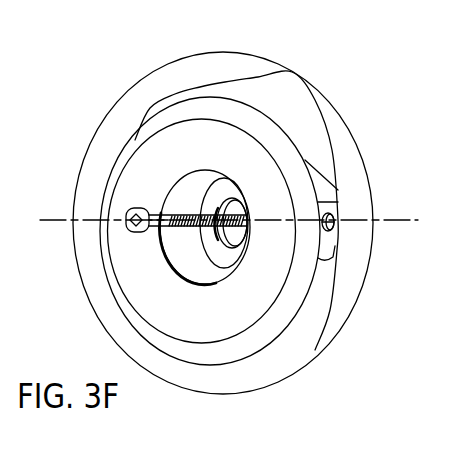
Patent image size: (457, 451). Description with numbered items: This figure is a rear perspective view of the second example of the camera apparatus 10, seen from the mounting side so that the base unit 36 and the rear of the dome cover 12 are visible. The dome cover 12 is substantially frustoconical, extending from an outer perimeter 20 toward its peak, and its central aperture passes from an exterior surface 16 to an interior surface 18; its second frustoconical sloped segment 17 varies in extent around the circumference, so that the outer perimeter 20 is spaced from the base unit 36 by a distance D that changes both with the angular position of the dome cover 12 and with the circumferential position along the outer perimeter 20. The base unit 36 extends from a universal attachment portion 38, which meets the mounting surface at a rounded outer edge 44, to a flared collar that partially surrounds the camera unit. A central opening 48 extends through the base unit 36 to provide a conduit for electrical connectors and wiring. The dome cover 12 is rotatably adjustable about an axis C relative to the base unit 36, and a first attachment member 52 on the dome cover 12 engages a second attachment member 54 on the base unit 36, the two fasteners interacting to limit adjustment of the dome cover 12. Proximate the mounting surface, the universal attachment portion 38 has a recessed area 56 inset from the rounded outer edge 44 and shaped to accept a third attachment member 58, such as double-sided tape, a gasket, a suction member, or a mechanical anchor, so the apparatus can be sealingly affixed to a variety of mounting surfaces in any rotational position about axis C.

The camera apparatus 10 is at (105, 109).
The dome cover 12 is at (325, 92).
The exterior surface 16 is at (334, 127).
The second frustoconical sloped segment 17 is at (349, 170).
The interior surface 18 is at (224, 64).
The outer perimeter 20 is at (327, 38).
The base unit 36 is at (201, 104).
The universal attachment portion 38 is at (399, 219).
The rounded outer edge 44 is at (191, 348).
The central opening 48 is at (181, 249).
The first attachment member 52 is at (330, 248).
The second attachment member 54 is at (338, 226).
The recessed area 56 is at (173, 142).
The third attachment member 58 is at (127, 205).
The axis of rotation C is at (203, 224).
The distance D is at (220, 145).